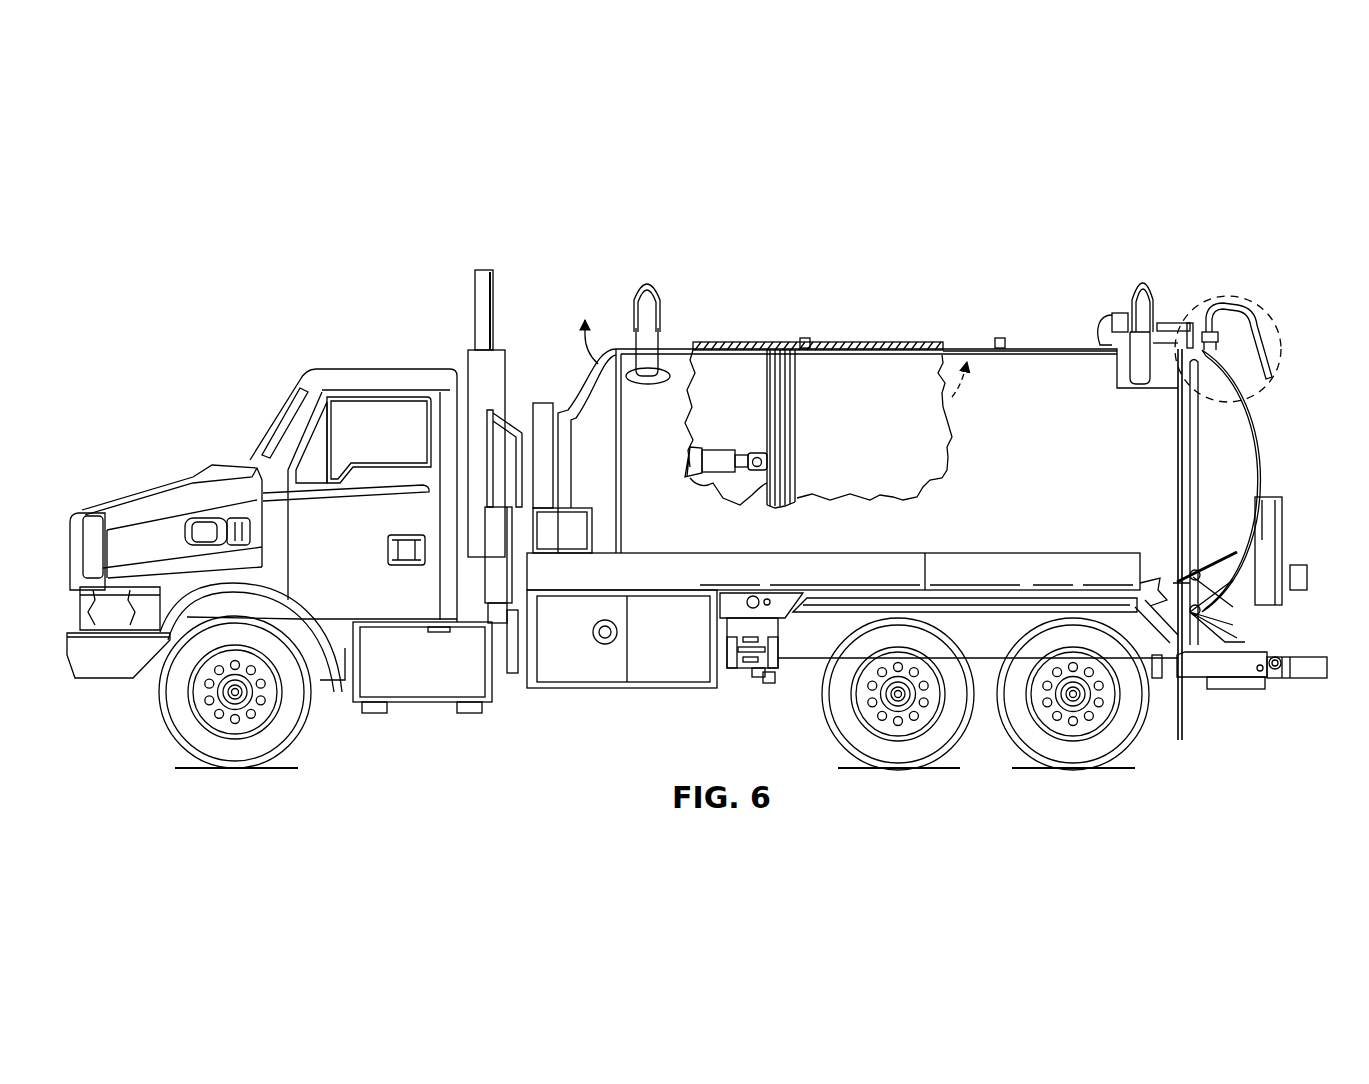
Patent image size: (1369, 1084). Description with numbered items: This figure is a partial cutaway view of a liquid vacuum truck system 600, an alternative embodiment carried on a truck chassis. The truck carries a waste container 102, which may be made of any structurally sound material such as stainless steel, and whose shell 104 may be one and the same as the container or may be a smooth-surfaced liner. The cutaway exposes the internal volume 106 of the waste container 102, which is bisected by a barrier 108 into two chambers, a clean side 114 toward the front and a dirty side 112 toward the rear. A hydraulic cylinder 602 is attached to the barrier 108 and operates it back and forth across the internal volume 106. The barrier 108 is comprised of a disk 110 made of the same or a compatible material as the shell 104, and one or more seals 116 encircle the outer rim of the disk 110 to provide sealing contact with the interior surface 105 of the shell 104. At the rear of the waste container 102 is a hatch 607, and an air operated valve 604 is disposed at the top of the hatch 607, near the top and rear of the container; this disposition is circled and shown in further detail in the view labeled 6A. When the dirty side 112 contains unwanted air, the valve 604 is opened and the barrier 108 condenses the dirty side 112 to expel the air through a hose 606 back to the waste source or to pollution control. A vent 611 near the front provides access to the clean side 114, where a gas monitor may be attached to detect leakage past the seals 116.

The liquid vacuum truck system 600 is at (230, 226).
The vent 611 is at (585, 339).
The internal volume 106 is at (739, 370).
The waste container 102 is at (976, 336).
The shell 104 is at (1038, 347).
The air operated valve 604 is at (1190, 318).
The hose 606 is at (1240, 300).
The detail view 6A is at (1275, 318).
The interior surface 105 is at (943, 402).
The hydraulic cylinder 602 is at (720, 449).
The disk 110 is at (788, 447).
The dirty side 112 is at (907, 458).
The clean side 114 is at (713, 483).
The barrier 108 is at (762, 482).
The seals 116 is at (795, 497).
The hatch 607 is at (1248, 481).